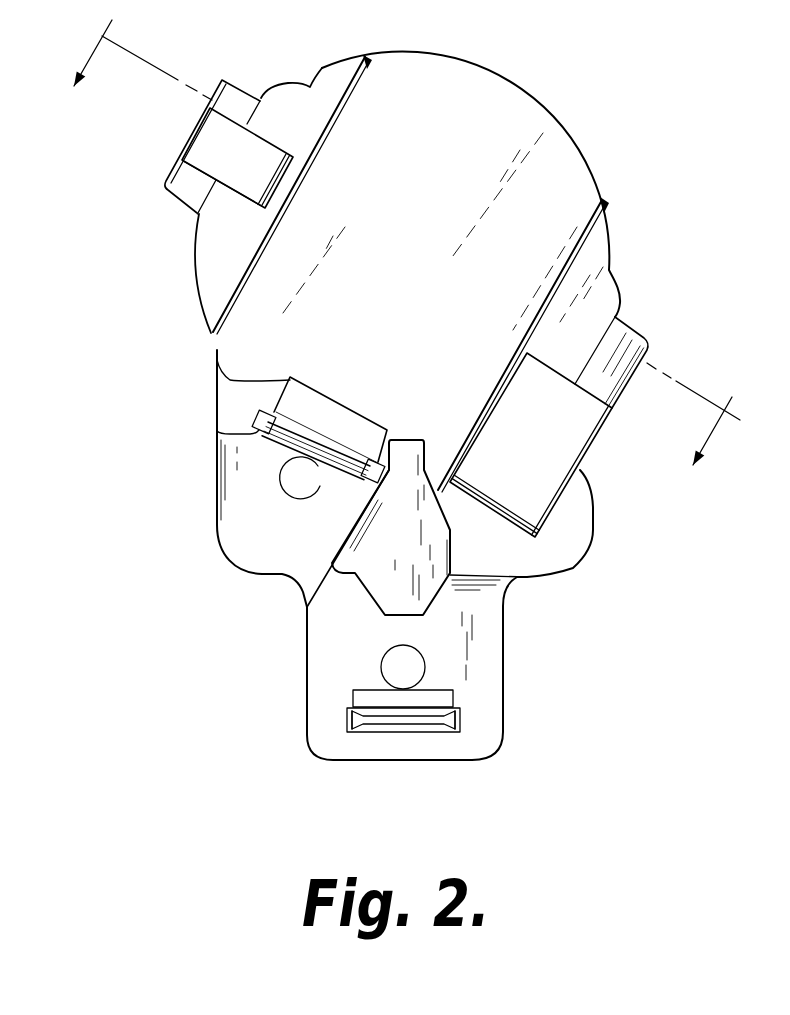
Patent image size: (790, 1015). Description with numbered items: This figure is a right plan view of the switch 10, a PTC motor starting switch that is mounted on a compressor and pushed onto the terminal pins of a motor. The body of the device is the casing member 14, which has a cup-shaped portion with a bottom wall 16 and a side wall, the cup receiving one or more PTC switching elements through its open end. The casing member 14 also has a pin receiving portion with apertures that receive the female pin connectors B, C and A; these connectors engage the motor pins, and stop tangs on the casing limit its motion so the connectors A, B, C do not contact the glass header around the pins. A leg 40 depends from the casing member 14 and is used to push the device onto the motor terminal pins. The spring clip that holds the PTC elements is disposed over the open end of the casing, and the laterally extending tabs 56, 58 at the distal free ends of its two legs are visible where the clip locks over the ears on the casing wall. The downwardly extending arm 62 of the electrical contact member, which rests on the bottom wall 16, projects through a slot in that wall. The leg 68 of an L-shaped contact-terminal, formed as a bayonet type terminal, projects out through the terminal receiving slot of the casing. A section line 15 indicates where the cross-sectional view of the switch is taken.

The switch 10 is at (175, 379).
The casing member 14 is at (217, 525).
The section line 15- 15 is at (381, 264).
The bottom wall 16 is at (394, 213).
The leg 40 is at (420, 562).
The laterally extending tab 56 is at (640, 341).
The laterally extending tab 58 is at (183, 198).
The downwardly extending arm 62 is at (258, 148).
The leg 68 is at (335, 424).
The female pin connector A is at (368, 688).
The female pin connector B is at (553, 450).
The female pin connector C is at (313, 468).